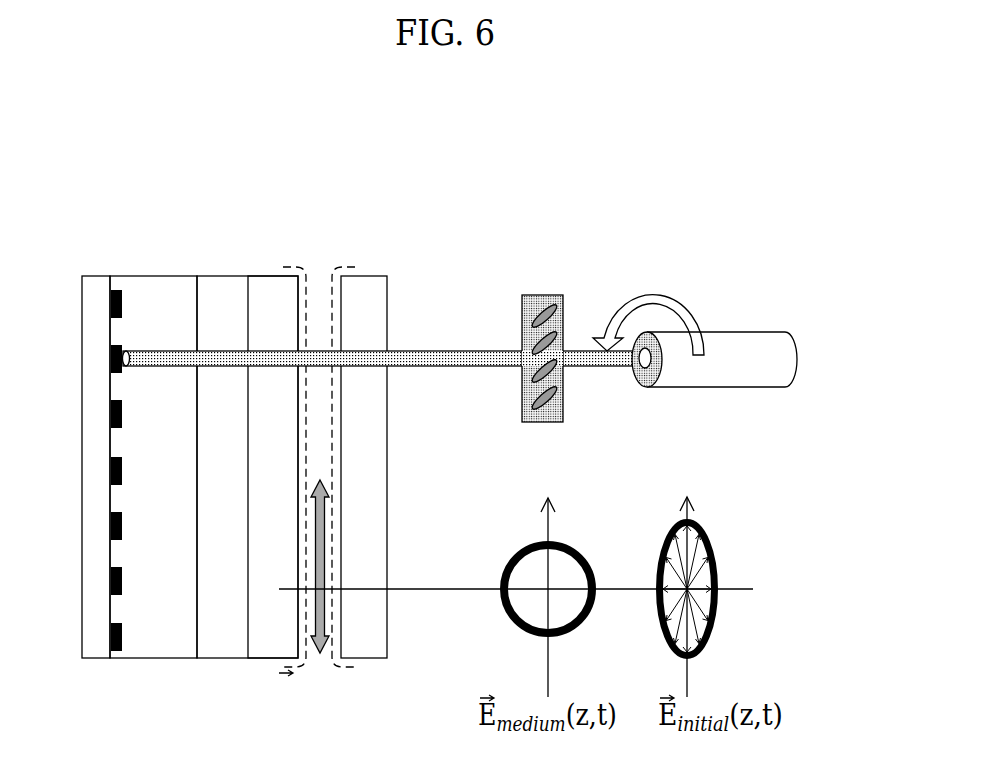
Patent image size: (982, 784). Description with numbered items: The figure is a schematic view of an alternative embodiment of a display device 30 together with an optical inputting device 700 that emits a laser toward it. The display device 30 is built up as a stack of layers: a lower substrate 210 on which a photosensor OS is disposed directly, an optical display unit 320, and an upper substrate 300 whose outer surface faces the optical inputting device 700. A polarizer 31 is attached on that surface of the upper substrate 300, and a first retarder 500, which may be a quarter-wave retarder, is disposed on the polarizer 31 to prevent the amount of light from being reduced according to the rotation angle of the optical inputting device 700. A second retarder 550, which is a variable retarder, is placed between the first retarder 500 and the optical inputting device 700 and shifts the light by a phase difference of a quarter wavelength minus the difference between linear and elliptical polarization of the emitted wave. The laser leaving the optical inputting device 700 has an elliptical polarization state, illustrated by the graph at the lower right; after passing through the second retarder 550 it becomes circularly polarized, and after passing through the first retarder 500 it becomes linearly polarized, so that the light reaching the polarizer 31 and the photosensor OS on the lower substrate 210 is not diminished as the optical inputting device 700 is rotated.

The display device 30 is at (373, 218).
The lower substrate 210 is at (97, 650).
The optical display unit 320 is at (153, 462).
The upper substrate 300 is at (247, 517).
The polarizer 31 is at (265, 643).
The first retarder 500 is at (375, 535).
The second retarder 550 is at (543, 422).
The optical inputting device 700 is at (710, 387).
The photosensor OS is at (123, 303).